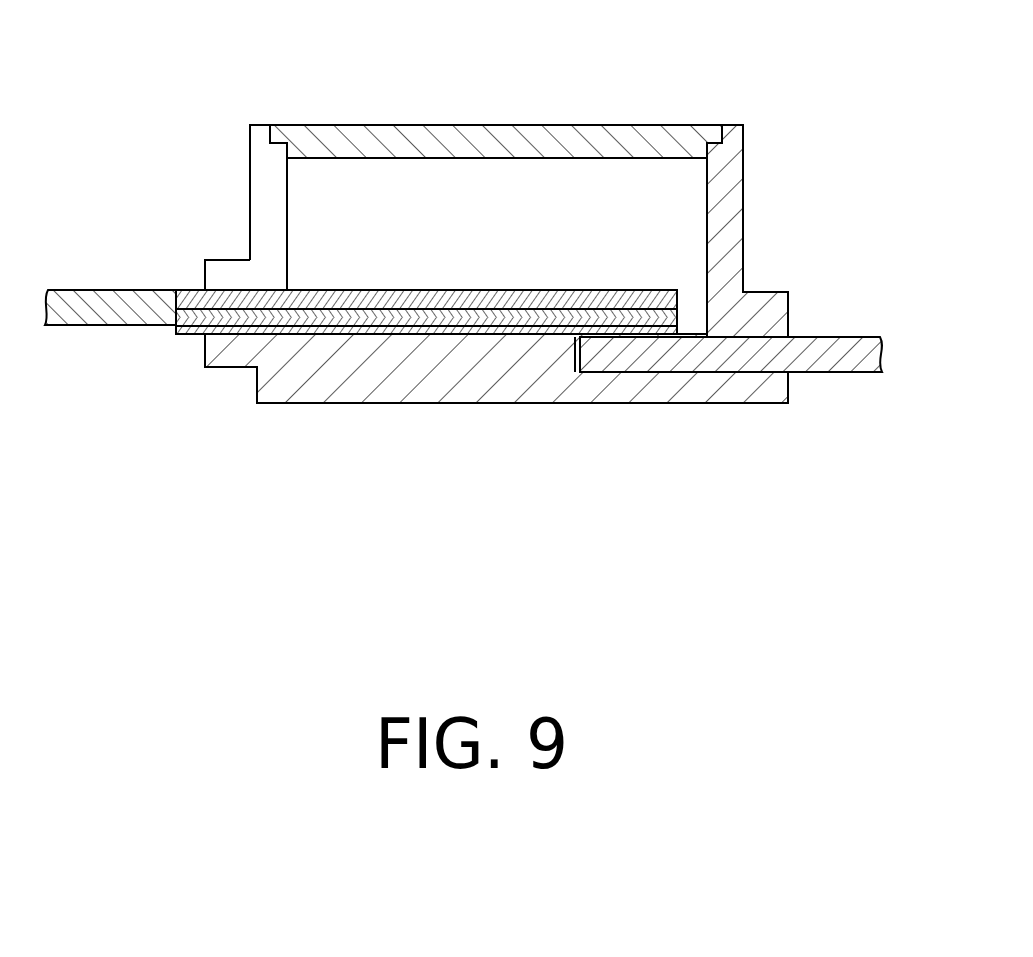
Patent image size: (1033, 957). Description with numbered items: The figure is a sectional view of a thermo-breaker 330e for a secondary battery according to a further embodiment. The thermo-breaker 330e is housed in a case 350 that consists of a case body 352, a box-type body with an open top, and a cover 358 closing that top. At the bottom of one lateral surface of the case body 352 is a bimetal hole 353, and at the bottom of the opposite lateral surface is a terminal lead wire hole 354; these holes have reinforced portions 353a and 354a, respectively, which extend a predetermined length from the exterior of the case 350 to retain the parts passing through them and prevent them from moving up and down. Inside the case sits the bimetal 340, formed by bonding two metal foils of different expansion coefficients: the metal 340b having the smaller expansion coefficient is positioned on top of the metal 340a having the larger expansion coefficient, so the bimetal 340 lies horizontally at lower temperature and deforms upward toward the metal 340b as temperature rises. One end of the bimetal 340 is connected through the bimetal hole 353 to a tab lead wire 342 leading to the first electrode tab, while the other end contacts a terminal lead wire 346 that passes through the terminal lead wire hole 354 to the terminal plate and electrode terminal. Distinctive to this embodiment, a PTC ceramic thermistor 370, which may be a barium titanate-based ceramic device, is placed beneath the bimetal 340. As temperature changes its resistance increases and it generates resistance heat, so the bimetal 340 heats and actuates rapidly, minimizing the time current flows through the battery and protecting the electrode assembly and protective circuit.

The thermo-breaker 330e is at (790, 128).
The case 350 is at (160, 40).
The case body 352 is at (257, 180).
The bimetal hole 353 is at (222, 290).
The reinforced portion 353a is at (227, 262).
The cover 358 is at (305, 127).
The terminal lead wire hole 354 is at (785, 313).
The reinforced portion 354a is at (777, 293).
The tab lead wire 342 is at (80, 322).
The terminal lead wire 346 is at (828, 373).
The bimetal 340 is at (402, 482).
The metal having a larger expansion coefficient 340a is at (388, 317).
The metal having a smaller expansion coefficient 340b is at (303, 305).
The PTC ceramic thermistor 370 is at (490, 333).